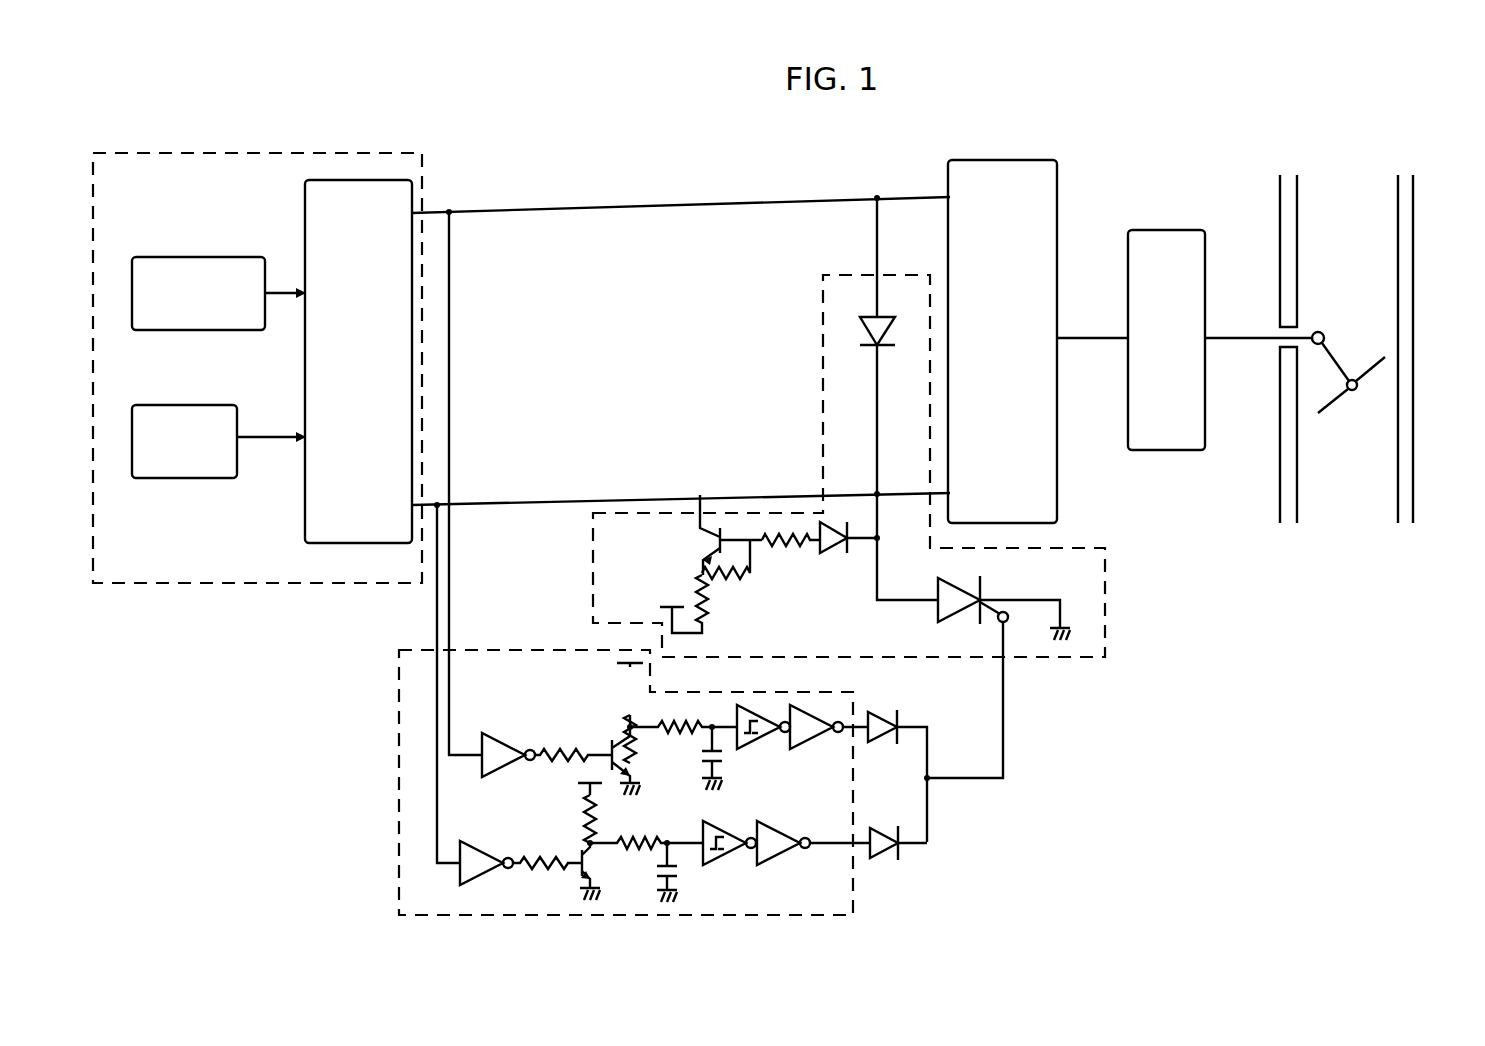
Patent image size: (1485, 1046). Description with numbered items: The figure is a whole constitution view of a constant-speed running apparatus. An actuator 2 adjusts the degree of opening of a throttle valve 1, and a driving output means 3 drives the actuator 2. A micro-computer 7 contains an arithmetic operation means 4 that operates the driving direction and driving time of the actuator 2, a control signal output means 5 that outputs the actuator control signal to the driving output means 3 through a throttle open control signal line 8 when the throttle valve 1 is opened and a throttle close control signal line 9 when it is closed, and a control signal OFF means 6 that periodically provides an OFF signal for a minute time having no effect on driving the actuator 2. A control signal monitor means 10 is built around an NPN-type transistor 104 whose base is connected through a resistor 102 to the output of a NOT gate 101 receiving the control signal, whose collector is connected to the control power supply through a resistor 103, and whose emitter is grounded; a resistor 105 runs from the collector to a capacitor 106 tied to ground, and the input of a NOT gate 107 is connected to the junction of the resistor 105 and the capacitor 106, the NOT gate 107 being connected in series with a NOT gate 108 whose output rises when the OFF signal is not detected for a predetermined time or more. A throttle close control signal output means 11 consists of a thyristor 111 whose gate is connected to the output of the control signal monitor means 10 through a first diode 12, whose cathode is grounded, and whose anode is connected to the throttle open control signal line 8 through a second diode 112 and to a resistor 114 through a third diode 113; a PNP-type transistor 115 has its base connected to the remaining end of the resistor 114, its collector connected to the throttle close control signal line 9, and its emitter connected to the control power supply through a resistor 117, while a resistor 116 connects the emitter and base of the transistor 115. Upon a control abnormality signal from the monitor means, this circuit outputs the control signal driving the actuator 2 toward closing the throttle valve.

The throttle valve 1 is at (1345, 135).
The actuator 2 is at (1170, 230).
The driving output means 3 is at (988, 160).
The arithmetic operation means 4 is at (190, 257).
The control signal output means 5 is at (345, 180).
The control signal OFF means 6 is at (148, 478).
The micro-computer 7 is at (302, 578).
The throttle open control signal line 8 is at (790, 198).
The throttle close control signal line 9 is at (481, 503).
The control signal monitor means 10 is at (840, 860).
The throttle close control signal output means 11 is at (1105, 575).
The first diode 12 is at (912, 843).
The NOT gate 101 is at (465, 884).
The resistor 102 is at (533, 852).
The resistor 103 is at (585, 820).
The NPN-type transistor 104 is at (583, 878).
The resistor 105 is at (633, 862).
The capacitor 106 is at (685, 872).
The NOT gate 107 is at (735, 858).
The NOT gate 108 is at (783, 858).
The thyristor 111 is at (998, 677).
The second diode 112 is at (855, 330).
The third diode 113 is at (820, 508).
The resistor 114 is at (800, 548).
The PNP-type transistor 115 is at (700, 543).
The resistor 116 is at (729, 578).
The resistor 117 is at (690, 594).